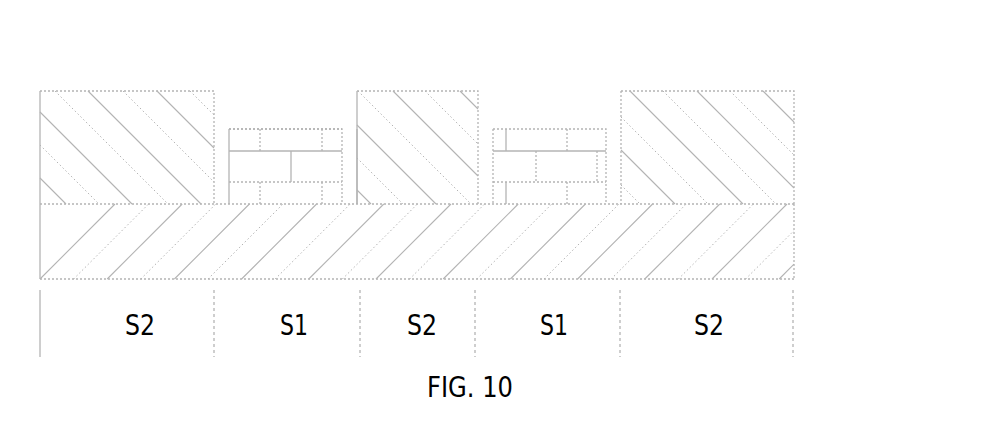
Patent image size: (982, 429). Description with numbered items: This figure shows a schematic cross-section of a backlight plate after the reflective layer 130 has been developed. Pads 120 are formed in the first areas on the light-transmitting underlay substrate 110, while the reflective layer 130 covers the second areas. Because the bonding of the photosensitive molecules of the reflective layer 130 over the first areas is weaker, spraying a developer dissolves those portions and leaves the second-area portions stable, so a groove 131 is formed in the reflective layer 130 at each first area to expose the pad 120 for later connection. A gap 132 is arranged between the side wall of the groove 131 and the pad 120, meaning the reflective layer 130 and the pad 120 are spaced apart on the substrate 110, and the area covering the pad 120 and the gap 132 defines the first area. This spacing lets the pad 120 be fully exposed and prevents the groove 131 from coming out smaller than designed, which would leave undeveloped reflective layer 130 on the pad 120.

The light-transmitting underlay substrate 110 is at (775, 255).
The pad 120 is at (528, 148).
The reflective layer 130 is at (775, 145).
The groove 131 is at (280, 114).
The gap 132 is at (350, 143).